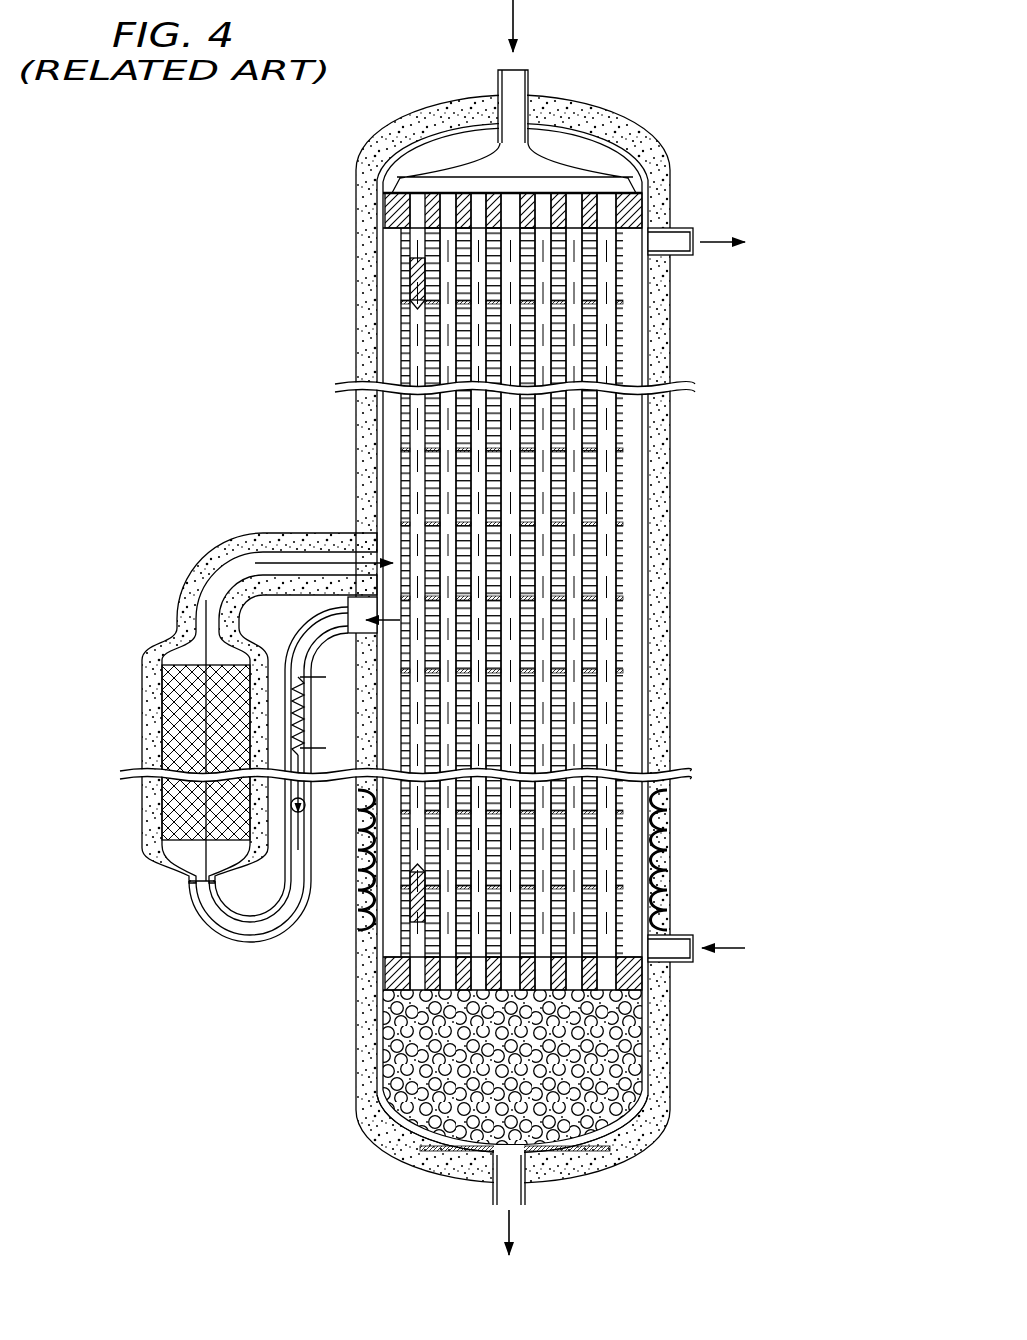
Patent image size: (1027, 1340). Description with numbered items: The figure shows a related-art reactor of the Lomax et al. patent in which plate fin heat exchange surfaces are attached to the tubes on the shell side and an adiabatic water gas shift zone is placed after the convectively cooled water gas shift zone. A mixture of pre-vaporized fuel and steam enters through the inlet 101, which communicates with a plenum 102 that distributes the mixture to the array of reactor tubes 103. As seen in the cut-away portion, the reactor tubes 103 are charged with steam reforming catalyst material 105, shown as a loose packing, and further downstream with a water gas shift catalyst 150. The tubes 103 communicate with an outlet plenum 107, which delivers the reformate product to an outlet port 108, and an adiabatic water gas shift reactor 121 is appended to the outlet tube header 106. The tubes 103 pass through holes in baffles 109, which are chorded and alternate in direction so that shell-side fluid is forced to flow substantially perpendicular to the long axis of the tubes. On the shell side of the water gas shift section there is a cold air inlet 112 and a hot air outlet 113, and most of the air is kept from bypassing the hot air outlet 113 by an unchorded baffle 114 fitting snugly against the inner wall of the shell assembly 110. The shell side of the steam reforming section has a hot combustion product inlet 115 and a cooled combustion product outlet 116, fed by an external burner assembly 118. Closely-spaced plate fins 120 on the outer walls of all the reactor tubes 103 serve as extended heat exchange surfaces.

The inlet for mixed, pre-vaporized fuel and steam 101 is at (521, 66).
The plenum 102 is at (548, 160).
The reactor tubes 103 is at (626, 188).
The steam reforming catalyst material 105 is at (407, 270).
The outlet tube header 106 is at (393, 980).
The outlet plenum 107 is at (418, 1150).
The outlet port 108 is at (498, 1207).
The baffles 109 is at (640, 310).
The shell assembly 110 is at (665, 690).
The cold air inlet 112 is at (696, 935).
The hot air outlet 113 is at (370, 550).
The unchorded baffle 114 is at (635, 585).
The hot combustion product inlet 115 is at (376, 600).
The cooled combustion product outlet 116 is at (654, 232).
The external burner assembly 118 is at (143, 645).
The plate fins 120 is at (662, 893).
The adiabatic water gas shift reactor 121 is at (436, 1058).
The water gas shift catalyst 150 is at (406, 918).